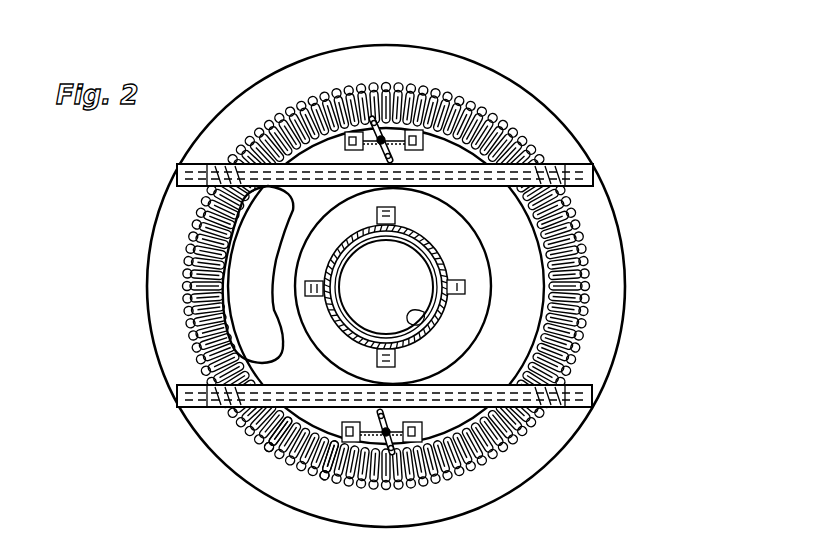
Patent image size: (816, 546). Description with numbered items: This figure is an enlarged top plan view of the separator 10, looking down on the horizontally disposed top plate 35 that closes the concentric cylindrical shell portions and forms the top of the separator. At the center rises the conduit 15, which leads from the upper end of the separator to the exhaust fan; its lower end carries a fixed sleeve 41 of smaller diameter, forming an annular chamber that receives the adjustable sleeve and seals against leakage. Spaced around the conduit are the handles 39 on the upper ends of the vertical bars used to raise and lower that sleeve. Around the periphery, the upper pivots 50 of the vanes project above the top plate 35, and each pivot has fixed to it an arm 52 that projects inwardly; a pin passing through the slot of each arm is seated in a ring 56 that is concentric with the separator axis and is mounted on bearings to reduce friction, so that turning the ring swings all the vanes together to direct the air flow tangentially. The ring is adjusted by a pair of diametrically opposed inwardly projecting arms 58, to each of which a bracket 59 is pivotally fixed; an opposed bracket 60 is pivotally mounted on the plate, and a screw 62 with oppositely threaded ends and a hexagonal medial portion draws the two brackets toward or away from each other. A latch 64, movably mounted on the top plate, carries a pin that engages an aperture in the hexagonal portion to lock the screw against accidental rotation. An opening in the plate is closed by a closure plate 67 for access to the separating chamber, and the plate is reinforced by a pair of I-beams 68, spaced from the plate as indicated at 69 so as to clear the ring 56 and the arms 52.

The separator 10 is at (146, 336).
The conduit 15 is at (436, 251).
The top plate 35 is at (550, 128).
The handles 39 is at (395, 215).
The fixed sleeve 41 is at (426, 323).
The upper pivots 50 is at (283, 118).
The arm 52 is at (582, 258).
The ring 56 is at (280, 448).
The inwardly projecting arms 58 is at (320, 470).
The bracket 59 is at (424, 144).
The bracket 60 is at (345, 143).
The screw 62 is at (370, 118).
The latch 64 is at (388, 498).
The closure plate 67 is at (241, 258).
The I-beams 68 is at (557, 166).
The spacing 69 is at (594, 166).